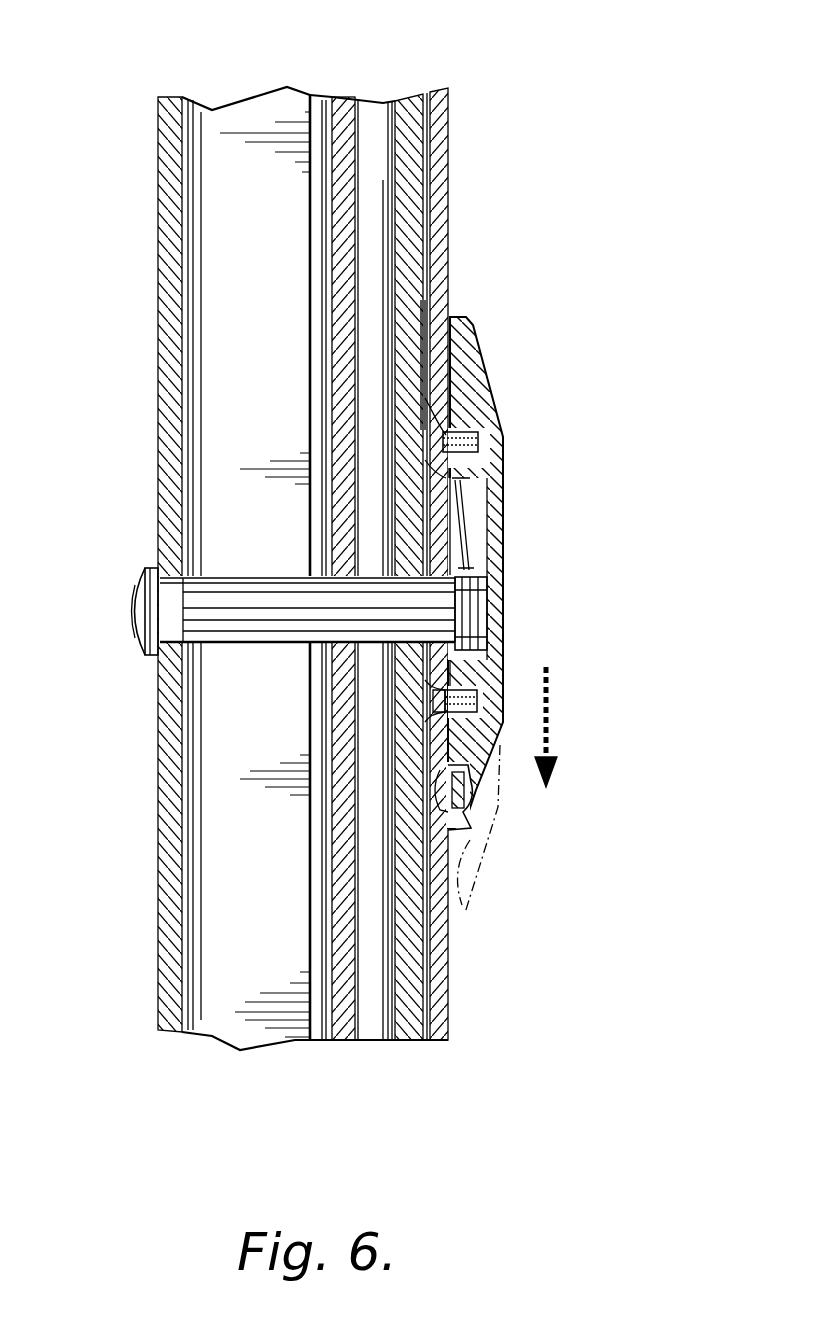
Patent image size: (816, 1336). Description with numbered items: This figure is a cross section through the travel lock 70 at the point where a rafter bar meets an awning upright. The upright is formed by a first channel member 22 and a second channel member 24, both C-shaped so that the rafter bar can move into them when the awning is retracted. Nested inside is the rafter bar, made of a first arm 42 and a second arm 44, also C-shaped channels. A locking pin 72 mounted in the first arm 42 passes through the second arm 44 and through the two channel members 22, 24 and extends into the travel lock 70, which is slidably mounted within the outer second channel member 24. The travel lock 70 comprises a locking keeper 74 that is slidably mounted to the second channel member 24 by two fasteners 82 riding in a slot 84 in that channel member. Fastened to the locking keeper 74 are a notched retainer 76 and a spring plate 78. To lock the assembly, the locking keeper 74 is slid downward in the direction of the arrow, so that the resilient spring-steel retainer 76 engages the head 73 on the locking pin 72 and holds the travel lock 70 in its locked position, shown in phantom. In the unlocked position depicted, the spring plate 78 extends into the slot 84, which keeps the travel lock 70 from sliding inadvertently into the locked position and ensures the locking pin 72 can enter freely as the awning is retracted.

The first channel member 22 is at (410, 100).
The second channel member 24 is at (447, 988).
The first arm 42 is at (163, 717).
The second arm 44 is at (343, 1028).
The travel lock 70 is at (572, 417).
The locking pin 72 is at (225, 592).
The head 73 is at (470, 617).
The locking keeper 74 is at (473, 357).
The retainer 76 is at (460, 533).
The spring plate 78 is at (460, 778).
The fasteners 82 is at (478, 420).
The slot 84 is at (455, 468).